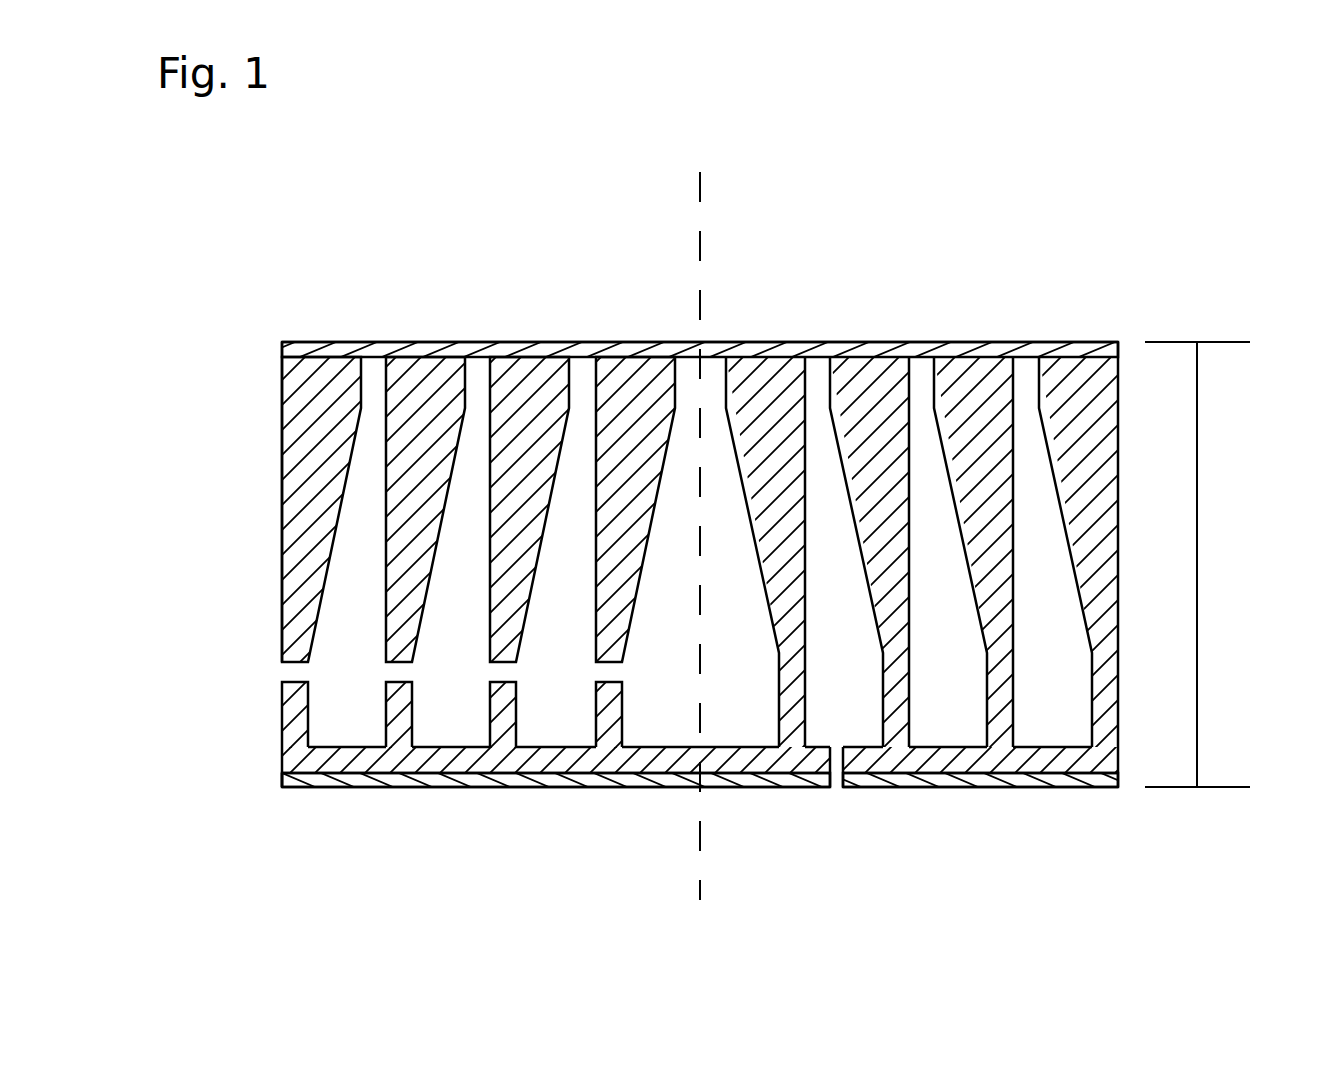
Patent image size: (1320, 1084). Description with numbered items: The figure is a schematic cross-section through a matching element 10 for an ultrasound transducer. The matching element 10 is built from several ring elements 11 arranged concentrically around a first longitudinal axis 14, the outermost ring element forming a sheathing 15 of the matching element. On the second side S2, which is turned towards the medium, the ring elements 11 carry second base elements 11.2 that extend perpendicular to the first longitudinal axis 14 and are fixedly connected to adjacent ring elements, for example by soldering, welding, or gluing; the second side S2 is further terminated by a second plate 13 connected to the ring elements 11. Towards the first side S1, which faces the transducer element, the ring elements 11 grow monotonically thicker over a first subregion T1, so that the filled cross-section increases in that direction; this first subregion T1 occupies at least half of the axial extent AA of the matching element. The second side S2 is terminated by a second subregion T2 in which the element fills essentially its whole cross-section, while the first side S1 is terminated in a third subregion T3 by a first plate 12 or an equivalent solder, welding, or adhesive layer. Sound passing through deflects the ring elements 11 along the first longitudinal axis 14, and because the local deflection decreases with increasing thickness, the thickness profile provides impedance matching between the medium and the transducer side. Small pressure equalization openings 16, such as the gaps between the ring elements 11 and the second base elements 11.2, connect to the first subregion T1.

The matching element 10 is at (703, 528).
The ring elements 11 is at (1065, 367).
The second base elements 11.2 is at (637, 762).
The first plate 12 is at (290, 345).
The second plate 13 is at (1092, 780).
The first longitudinal axis 14 is at (699, 210).
The sheathing 15 is at (310, 432).
The pressure equalization openings 16 is at (596, 668).
The first side S1 is at (387, 303).
The second side S2 is at (282, 798).
The first subregion T1 is at (255, 563).
The second subregion T2 is at (257, 773).
The third subregion T3 is at (257, 353).
The axial extent AA is at (1217, 564).